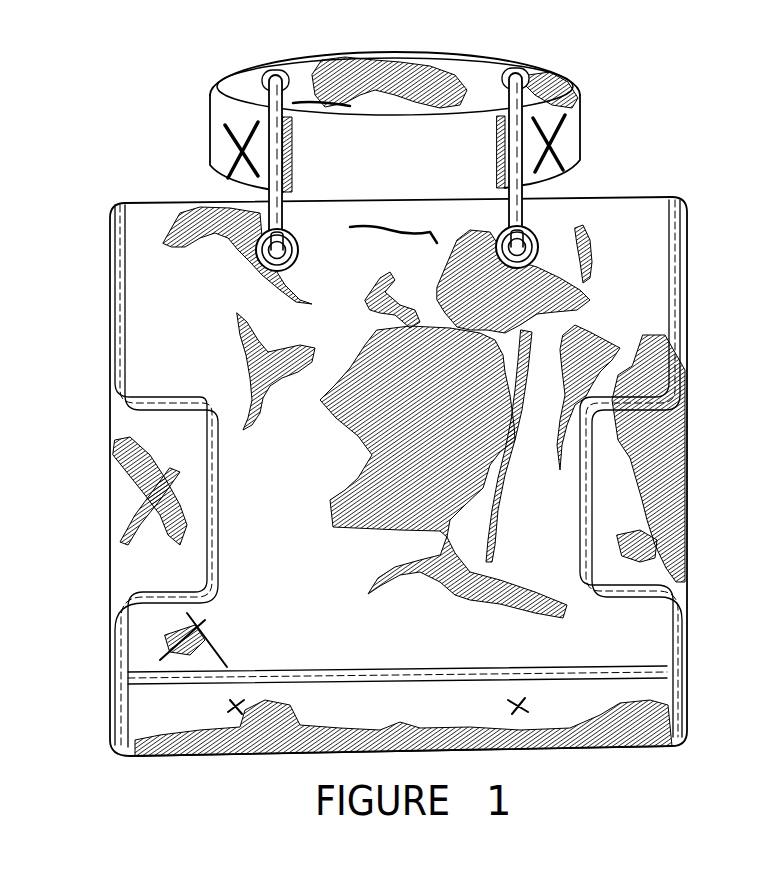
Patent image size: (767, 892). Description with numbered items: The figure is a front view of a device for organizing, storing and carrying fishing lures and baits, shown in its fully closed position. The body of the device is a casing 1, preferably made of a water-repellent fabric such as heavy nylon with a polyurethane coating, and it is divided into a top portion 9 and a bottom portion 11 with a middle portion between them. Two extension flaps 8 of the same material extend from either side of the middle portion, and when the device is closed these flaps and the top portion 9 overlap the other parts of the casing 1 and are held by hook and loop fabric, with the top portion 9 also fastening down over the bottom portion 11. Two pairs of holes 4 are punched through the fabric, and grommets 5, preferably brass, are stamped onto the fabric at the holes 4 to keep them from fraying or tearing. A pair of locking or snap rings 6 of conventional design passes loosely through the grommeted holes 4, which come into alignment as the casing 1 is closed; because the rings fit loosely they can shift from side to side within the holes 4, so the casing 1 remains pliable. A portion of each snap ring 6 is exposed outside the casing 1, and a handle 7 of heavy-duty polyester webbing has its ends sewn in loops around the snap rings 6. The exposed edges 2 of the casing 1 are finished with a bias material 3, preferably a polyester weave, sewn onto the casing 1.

The casing 1 is at (121, 157).
The exposed edges 2 is at (633, 672).
The bias material 3 is at (593, 532).
The holes 4 is at (297, 240).
The grommets 5 is at (505, 236).
The snap rings 6 is at (535, 225).
The handle 7 is at (513, 60).
The extension flaps 8 is at (157, 437).
The top portion 9 is at (598, 290).
The bottom portion 11 is at (657, 750).